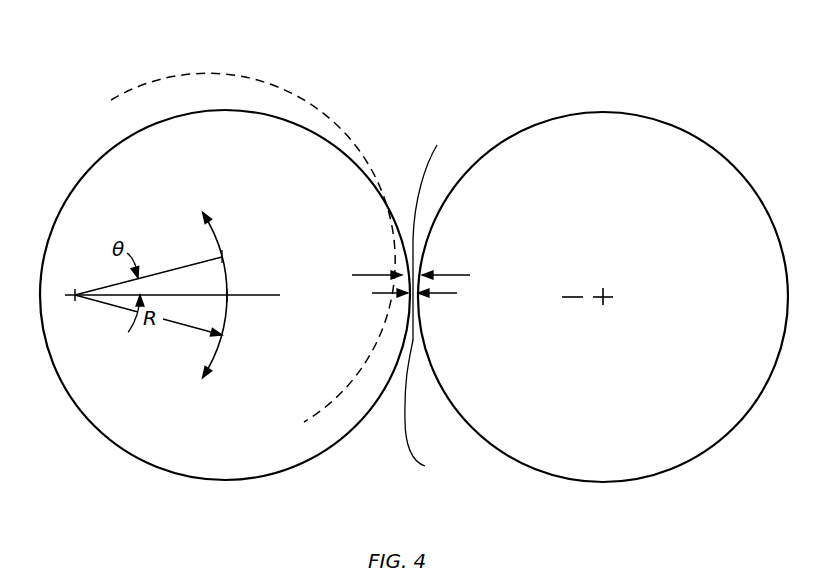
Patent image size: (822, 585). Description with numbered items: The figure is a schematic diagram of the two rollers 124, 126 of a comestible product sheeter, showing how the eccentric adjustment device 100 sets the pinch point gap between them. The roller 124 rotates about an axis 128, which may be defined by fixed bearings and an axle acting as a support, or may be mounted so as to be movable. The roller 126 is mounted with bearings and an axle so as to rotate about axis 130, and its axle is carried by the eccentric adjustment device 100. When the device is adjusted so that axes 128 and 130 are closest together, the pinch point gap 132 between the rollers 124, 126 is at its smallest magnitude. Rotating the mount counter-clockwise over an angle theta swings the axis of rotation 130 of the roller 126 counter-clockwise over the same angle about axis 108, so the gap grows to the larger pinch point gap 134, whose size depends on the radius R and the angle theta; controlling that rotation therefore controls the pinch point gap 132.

The eccentric adjustment device 100 is at (141, 78).
The axis 108 is at (75, 288).
The roller 124 is at (647, 426).
The roller 126 is at (192, 458).
The axis 128 is at (603, 282).
The axis 130 is at (224, 257).
The pinch point gap 132 is at (436, 311).
The larger pinch point gap 134 is at (411, 210).